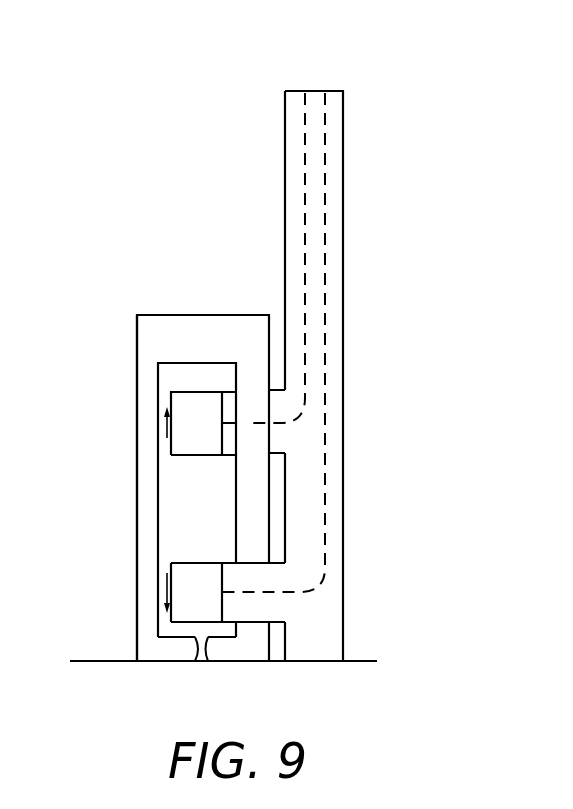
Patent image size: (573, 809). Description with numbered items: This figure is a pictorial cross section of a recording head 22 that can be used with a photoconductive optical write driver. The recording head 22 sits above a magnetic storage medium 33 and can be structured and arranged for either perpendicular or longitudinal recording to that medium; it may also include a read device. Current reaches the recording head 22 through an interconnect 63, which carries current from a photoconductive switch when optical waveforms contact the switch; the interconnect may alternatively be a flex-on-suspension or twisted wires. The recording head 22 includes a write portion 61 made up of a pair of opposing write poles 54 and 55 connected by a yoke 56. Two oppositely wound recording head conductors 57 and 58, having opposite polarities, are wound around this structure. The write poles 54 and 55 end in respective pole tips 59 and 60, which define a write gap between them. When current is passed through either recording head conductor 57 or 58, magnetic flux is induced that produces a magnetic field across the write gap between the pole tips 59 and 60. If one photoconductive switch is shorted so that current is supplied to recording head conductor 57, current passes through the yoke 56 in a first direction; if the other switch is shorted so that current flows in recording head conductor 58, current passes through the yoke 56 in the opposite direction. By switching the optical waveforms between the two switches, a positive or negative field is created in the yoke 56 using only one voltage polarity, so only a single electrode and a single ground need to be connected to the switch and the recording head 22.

The recording head 22 is at (459, 319).
The magnetic storage medium 33 is at (353, 663).
The write pole 54 is at (146, 512).
The write pole 55 is at (250, 507).
The yoke 56 is at (195, 327).
The recording head conductor 57 is at (186, 582).
The recording head conductor 58 is at (192, 441).
The pole tip 59 is at (199, 662).
The pole tip 60 is at (208, 661).
The write portion 61 is at (127, 622).
The interconnect 63 is at (315, 80).